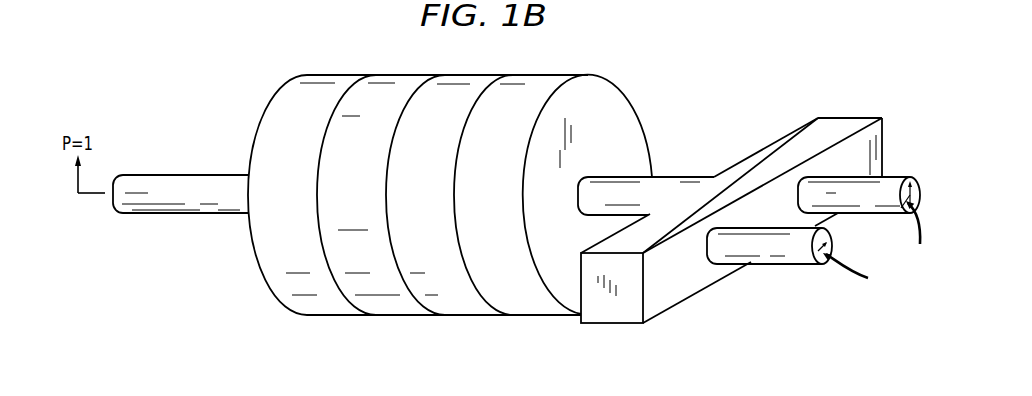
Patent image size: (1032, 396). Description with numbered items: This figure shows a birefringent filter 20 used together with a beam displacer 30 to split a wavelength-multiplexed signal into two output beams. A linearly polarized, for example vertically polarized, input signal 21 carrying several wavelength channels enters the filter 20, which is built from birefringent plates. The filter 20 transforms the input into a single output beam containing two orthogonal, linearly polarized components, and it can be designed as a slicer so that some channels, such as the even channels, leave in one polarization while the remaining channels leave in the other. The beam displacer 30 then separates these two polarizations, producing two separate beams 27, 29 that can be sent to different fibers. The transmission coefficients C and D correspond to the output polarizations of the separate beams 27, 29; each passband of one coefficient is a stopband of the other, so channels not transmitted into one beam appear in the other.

The filter 20 is at (258, 340).
The input signal 21 is at (90, 196).
The separate beam 27 is at (818, 253).
The separate beam 29 is at (907, 201).
The beam displacer 30 is at (622, 311).